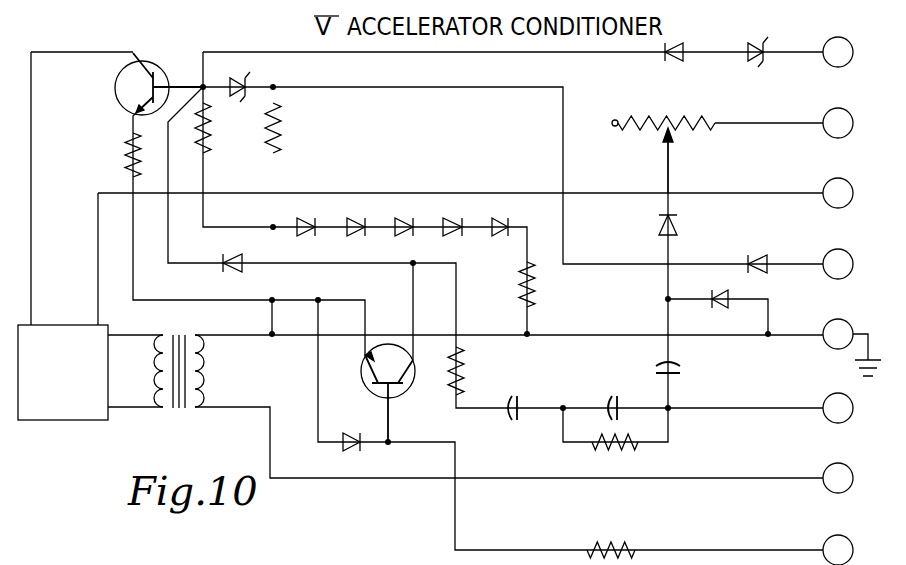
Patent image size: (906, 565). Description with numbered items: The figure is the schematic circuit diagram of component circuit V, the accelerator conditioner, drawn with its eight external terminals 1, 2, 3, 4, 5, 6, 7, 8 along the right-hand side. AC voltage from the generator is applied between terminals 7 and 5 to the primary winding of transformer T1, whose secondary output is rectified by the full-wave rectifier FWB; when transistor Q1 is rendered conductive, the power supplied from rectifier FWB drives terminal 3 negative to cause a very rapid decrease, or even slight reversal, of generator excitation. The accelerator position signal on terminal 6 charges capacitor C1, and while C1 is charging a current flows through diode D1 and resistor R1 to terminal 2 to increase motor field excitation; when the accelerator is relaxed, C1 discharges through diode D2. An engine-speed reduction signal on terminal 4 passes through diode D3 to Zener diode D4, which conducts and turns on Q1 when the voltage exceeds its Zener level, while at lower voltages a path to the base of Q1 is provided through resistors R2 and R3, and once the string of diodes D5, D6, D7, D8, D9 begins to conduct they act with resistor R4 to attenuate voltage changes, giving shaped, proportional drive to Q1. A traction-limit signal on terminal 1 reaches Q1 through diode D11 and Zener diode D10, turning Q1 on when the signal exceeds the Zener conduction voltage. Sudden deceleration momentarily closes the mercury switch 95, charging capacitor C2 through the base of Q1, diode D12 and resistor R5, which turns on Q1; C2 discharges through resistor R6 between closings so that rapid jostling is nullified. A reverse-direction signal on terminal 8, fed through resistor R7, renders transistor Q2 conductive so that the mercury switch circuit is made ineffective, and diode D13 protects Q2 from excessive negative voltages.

The transistor Q1 is at (145, 84).
The resistor R3 is at (167, 140).
The resistor R2 is at (286, 128).
The Zener diode D4 is at (234, 78).
The diode D5 is at (306, 216).
The diode D6 is at (356, 216).
The diode D7 is at (404, 216).
The diode D8 is at (452, 216).
The diode D9 is at (500, 216).
The diode D12 is at (234, 252).
The resistor R4 is at (513, 284).
The resistor R5 is at (470, 371).
The transistor Q2 is at (394, 393).
The diode D13 is at (352, 430).
The mercury switch 95 is at (518, 395).
The diode D11 is at (676, 67).
The Zener diode D10 is at (746, 64).
The resistor R1 is at (717, 154).
The diode D1 is at (685, 225).
The diode D3 is at (753, 252).
The diode D2 is at (726, 311).
The capacitor C1 is at (684, 371).
The capacitor C2 is at (612, 396).
The resistor R6 is at (615, 453).
The resistor R7 is at (611, 538).
The transformer T1 is at (182, 384).
The rectifier FWB is at (63, 372).
The terminal 1 is at (838, 52).
The terminal 2 is at (838, 123).
The terminal 3 is at (838, 193).
The terminal 4 is at (838, 264).
The terminal 5 is at (838, 334).
The terminal 6 is at (838, 408).
The terminal 7 is at (838, 478).
The terminal 8 is at (838, 550).